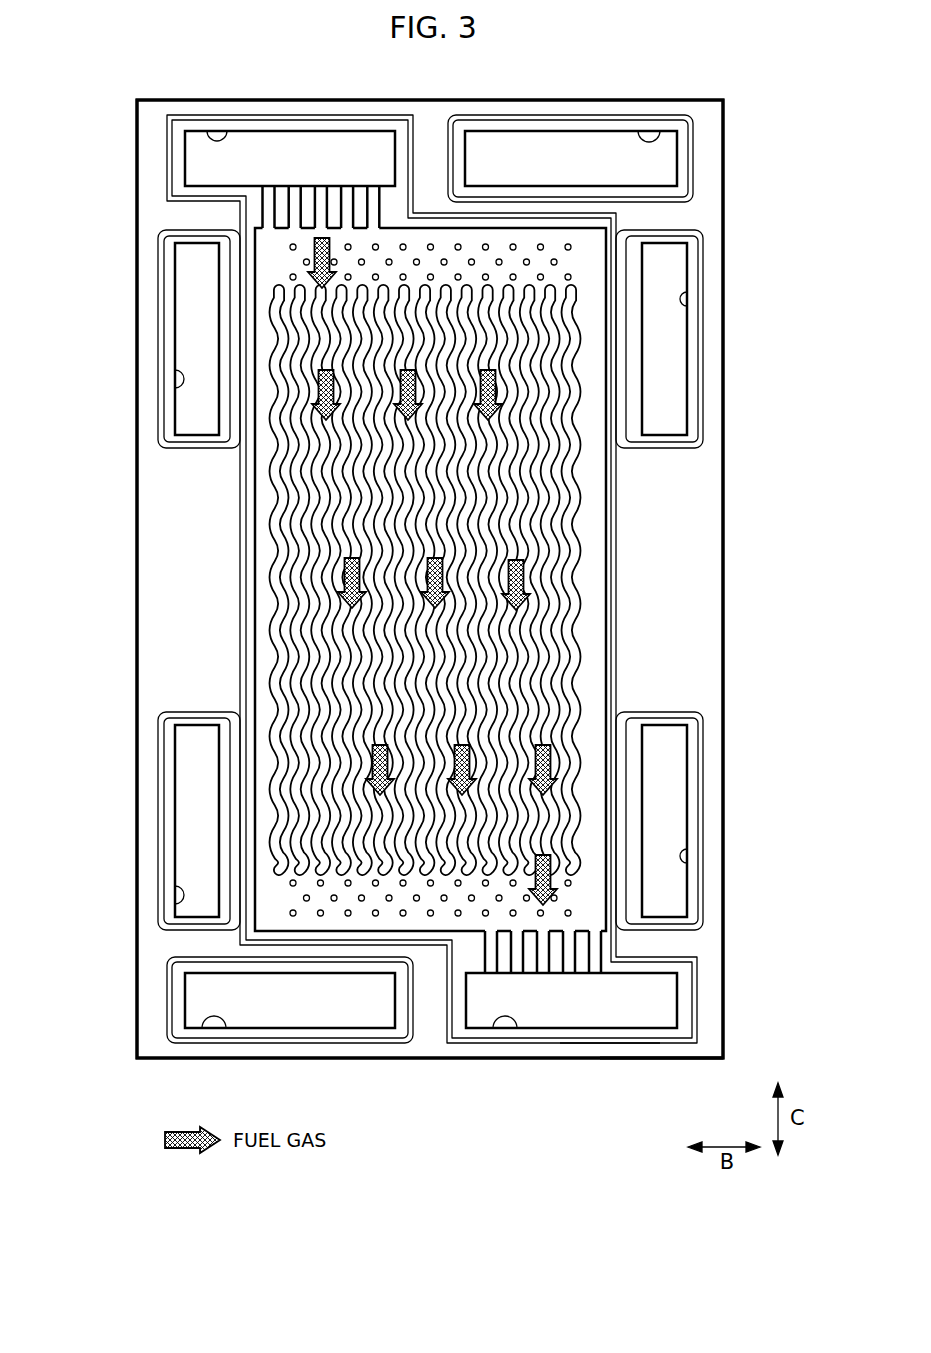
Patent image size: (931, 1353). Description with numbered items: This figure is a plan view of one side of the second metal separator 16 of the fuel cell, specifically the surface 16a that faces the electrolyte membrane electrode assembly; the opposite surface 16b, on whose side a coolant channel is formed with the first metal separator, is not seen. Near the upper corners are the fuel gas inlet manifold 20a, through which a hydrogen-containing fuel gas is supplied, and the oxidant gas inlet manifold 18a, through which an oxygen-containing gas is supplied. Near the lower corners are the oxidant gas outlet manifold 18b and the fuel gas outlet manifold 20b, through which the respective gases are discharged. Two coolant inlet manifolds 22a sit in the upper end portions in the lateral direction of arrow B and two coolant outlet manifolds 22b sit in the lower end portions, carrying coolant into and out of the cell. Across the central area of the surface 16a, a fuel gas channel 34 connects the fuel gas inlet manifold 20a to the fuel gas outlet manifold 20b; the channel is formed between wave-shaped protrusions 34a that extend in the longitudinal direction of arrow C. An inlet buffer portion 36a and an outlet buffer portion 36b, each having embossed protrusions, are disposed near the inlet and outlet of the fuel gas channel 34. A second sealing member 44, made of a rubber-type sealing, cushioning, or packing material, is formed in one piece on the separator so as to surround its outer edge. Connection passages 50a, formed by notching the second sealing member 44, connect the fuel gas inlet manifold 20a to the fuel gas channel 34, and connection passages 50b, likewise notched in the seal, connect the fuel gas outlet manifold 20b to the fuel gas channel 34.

The second metal separator 16 is at (503, 63).
The surface 16a is at (667, 1050).
The surface 16b is at (613, 1050).
The oxidant gas inlet manifold 18a is at (660, 131).
The oxidant gas outlet manifold 18b is at (203, 1029).
The fuel gas inlet manifold 20a is at (227, 131).
The fuel gas outlet manifold 20b is at (492, 1029).
The coolant inlet manifold 22a is at (178, 388).
The coolant outlet manifold 22b is at (180, 903).
The fuel gas channel 34 is at (471, 579).
The wave-shaped protrusions 34a is at (567, 513).
The inlet buffer portion 36a is at (555, 262).
The outlet buffer portion 36b is at (376, 918).
The second sealing member 44 is at (723, 161).
The connection passages 50a is at (348, 196).
The connection passages 50b is at (568, 963).